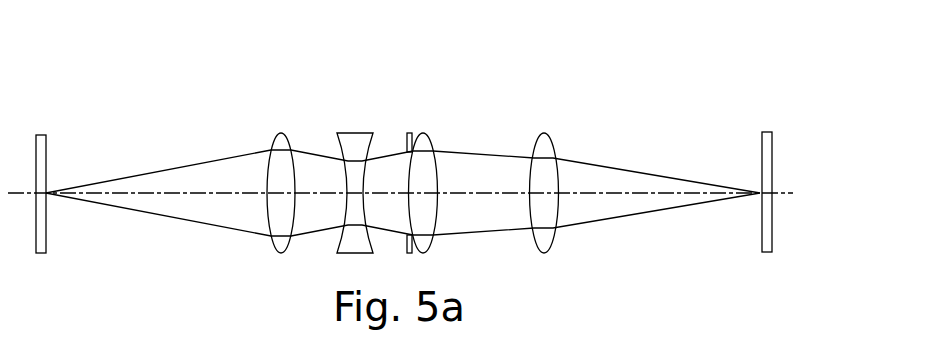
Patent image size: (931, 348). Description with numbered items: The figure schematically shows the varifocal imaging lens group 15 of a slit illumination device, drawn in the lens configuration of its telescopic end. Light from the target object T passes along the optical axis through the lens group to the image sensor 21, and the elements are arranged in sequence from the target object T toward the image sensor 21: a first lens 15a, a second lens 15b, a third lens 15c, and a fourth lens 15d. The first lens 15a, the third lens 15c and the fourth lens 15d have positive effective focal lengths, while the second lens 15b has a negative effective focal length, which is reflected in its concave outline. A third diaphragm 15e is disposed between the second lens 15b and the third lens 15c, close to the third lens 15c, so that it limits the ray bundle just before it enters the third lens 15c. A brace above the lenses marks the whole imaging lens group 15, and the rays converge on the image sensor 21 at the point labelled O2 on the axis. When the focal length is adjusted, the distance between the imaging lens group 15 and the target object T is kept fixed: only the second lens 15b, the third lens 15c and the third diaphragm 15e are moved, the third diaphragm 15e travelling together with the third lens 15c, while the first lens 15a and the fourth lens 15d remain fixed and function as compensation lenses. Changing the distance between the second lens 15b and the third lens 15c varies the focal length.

The target object T is at (43, 135).
The imaging lens group 15 is at (572, 53).
The first lens 15a is at (282, 142).
The second lens 15b is at (356, 140).
The third lens 15c is at (423, 143).
The fourth lens 15d is at (545, 142).
The third diaphragm 15e is at (410, 133).
The image sensor 21 is at (768, 132).
The optical axis point O2 is at (813, 194).